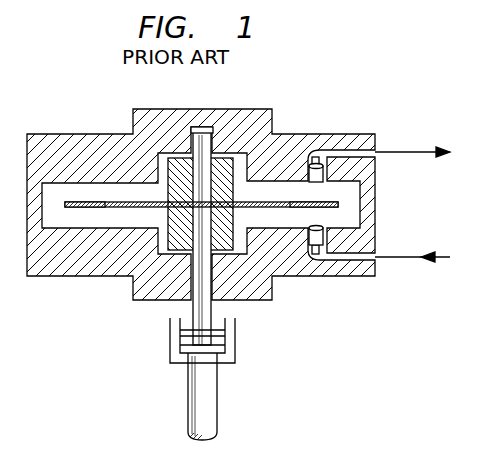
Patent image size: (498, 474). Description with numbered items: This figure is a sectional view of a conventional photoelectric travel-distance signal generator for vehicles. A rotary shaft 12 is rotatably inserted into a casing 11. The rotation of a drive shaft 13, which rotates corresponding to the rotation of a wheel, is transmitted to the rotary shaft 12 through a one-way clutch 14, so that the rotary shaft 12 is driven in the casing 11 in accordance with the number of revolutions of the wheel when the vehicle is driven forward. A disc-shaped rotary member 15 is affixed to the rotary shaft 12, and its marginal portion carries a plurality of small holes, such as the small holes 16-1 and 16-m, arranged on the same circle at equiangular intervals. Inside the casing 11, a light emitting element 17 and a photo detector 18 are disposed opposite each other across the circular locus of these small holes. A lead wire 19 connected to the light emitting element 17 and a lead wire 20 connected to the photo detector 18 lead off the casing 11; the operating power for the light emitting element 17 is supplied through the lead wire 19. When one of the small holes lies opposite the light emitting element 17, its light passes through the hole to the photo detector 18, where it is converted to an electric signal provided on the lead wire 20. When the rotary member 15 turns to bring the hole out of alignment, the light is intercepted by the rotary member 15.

The casing 11 is at (156, 120).
The rotary shaft 12 is at (202, 143).
The drive shaft 13 is at (205, 400).
The one-way clutch 14 is at (230, 338).
The rotary member 15 is at (263, 203).
The small hole 16-m is at (85, 203).
The small hole 16-1 is at (325, 208).
The light emitting element 17 is at (323, 228).
The photo detector 18 is at (323, 183).
The lead wire 19 is at (409, 258).
The lead wire 20 is at (410, 151).